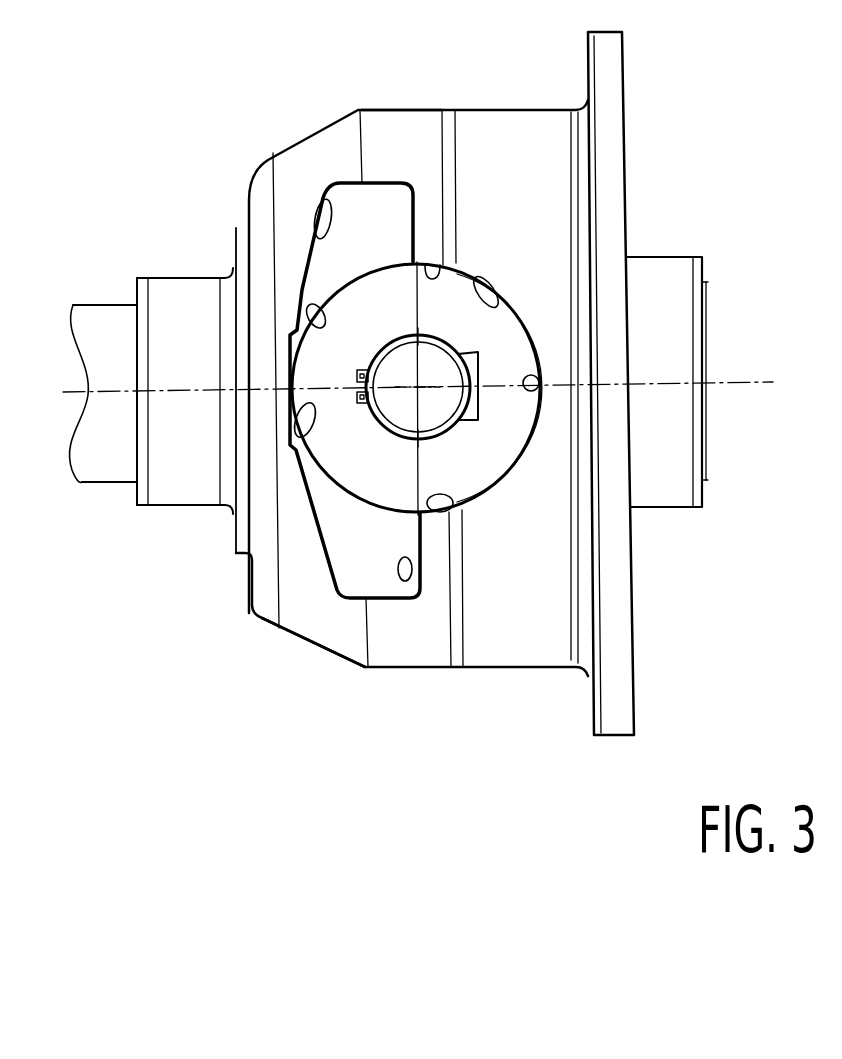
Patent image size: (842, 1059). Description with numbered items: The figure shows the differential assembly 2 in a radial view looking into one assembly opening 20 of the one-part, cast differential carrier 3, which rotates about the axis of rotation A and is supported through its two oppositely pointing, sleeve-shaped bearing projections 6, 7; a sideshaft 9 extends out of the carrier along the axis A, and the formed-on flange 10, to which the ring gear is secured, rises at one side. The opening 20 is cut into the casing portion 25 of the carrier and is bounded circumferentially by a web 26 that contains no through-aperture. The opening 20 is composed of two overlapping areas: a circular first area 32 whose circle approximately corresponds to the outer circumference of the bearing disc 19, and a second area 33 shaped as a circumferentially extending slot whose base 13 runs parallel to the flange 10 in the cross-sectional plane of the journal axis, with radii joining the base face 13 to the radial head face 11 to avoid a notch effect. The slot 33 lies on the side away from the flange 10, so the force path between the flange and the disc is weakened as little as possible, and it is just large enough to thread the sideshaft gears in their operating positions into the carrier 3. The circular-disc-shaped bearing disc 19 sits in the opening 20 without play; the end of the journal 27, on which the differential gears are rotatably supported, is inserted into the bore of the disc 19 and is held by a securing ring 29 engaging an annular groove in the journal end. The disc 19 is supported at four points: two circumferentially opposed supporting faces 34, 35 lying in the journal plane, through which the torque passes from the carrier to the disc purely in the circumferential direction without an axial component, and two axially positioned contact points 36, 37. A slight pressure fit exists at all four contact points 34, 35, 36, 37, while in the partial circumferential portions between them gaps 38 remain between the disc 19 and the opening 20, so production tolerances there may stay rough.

The differential assembly 2 is at (173, 140).
The differential carrier 3 is at (265, 167).
The bearing projection 6 is at (665, 280).
The bearing projection 7 is at (170, 295).
The sideshaft 9 is at (92, 320).
The flange 10 is at (612, 62).
The radial head face 11 is at (320, 303).
The base 13 is at (413, 558).
The bearing disc 19 is at (490, 460).
The assembly opening 20 is at (381, 250).
The casing portion 25 is at (350, 637).
The web 26 is at (378, 127).
The journal 27 is at (402, 365).
The securing ring 29 is at (472, 365).
The first area 32 is at (480, 277).
The second area 33 is at (332, 196).
The supporting face 34 is at (442, 494).
The supporting face 35 is at (433, 258).
The contact point 36 is at (545, 373).
The contact point 37 is at (307, 440).
The gap 38 is at (535, 447).
The axis of rotation A is at (72, 418).